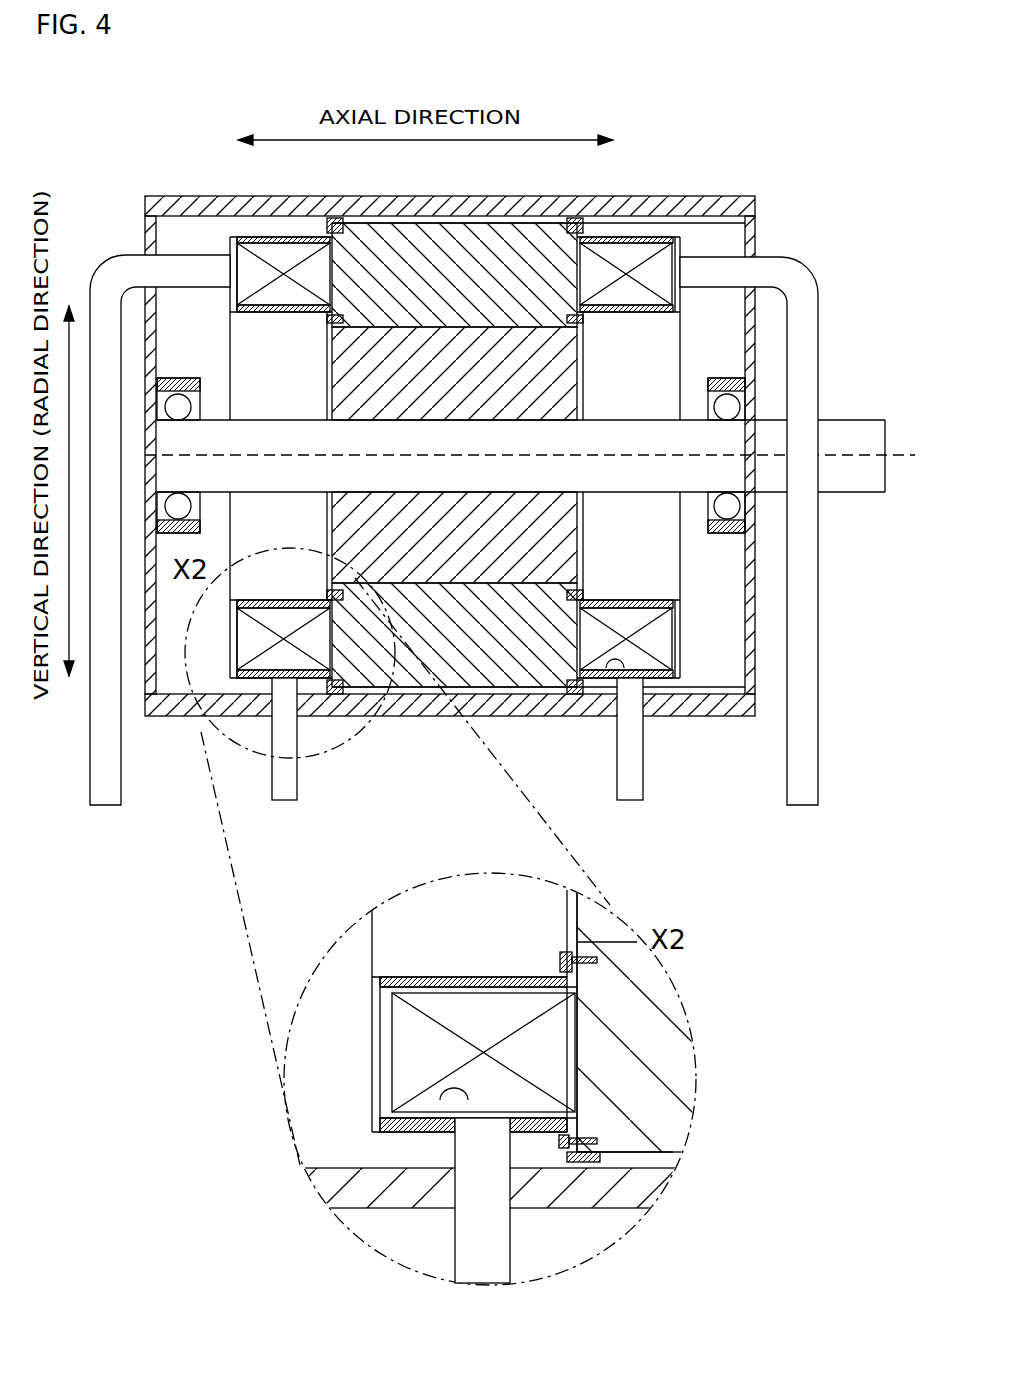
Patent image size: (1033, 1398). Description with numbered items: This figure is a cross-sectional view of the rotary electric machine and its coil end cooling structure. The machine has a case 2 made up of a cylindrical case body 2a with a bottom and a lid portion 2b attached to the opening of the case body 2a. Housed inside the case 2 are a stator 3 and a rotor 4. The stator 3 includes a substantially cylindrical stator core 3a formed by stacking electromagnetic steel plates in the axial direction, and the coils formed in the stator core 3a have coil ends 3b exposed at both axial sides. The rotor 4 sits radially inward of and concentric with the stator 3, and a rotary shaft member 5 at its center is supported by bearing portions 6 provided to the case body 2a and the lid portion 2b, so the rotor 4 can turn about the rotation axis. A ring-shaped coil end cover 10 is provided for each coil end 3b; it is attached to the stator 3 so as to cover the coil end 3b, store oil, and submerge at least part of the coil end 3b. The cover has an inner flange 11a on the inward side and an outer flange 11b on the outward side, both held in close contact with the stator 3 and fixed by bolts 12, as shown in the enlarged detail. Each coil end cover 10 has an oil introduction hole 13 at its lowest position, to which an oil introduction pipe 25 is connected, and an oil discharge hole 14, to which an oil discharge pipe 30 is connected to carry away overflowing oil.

The case 2 is at (463, 401).
The case body 2a is at (707, 212).
The lid portion 2b is at (670, 134).
The stator 3 is at (562, 583).
The stator core 3a is at (512, 222).
The coil end 3b is at (292, 240).
The rotor 4 is at (580, 547).
The rotary shaft member 5 is at (843, 420).
The bearing portion 6 is at (748, 398).
The coil end cover 10 is at (241, 262).
The inner flange 11a is at (596, 220).
The outer flange 11b is at (332, 222).
The bolt 12 is at (312, 243).
The oil introduction hole 13 is at (616, 668).
The oil discharge hole 14 is at (237, 280).
The oil introduction pipe 25 is at (297, 788).
The oil discharge pipe 30 is at (108, 255).